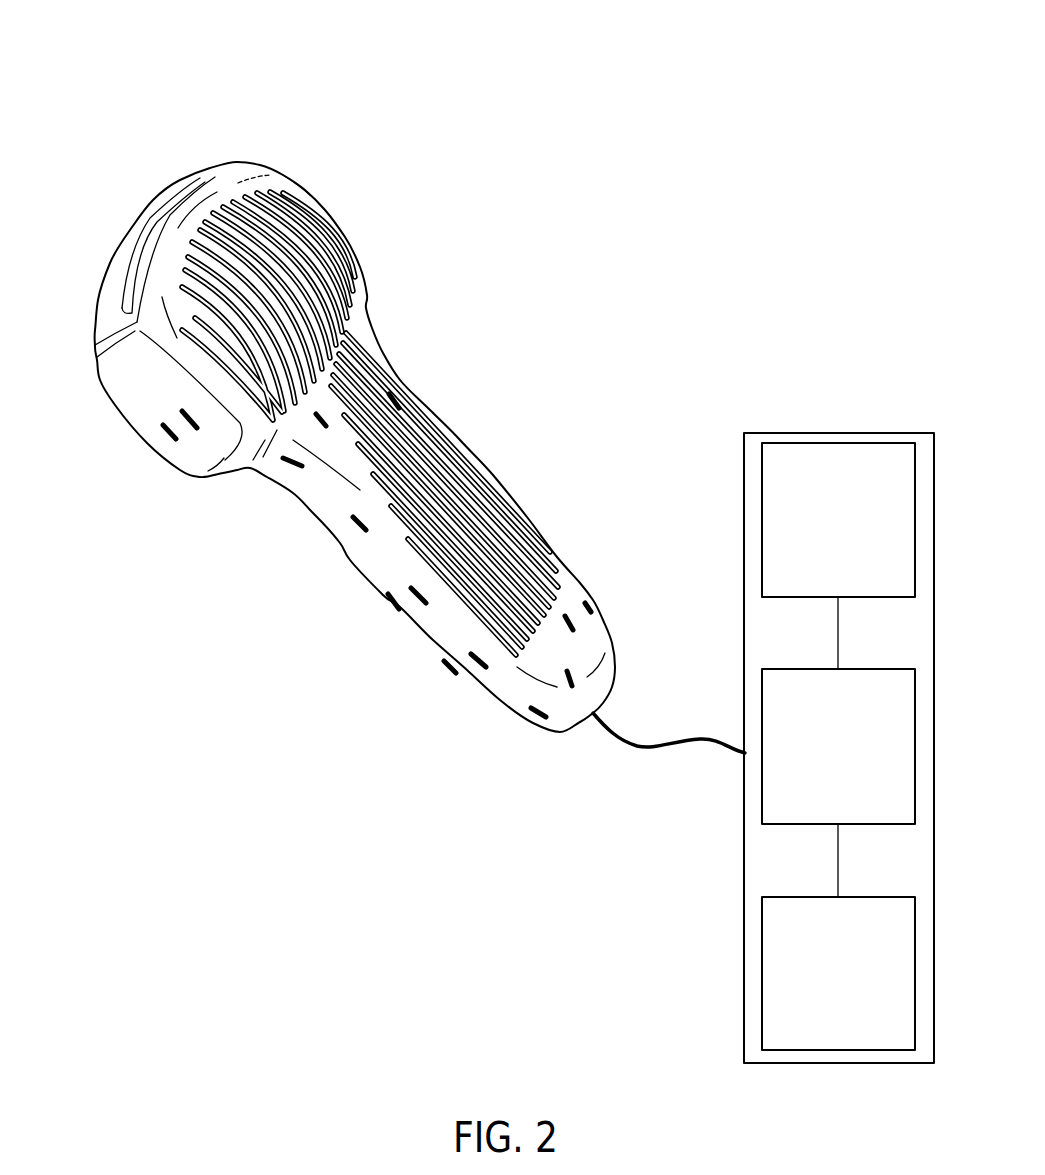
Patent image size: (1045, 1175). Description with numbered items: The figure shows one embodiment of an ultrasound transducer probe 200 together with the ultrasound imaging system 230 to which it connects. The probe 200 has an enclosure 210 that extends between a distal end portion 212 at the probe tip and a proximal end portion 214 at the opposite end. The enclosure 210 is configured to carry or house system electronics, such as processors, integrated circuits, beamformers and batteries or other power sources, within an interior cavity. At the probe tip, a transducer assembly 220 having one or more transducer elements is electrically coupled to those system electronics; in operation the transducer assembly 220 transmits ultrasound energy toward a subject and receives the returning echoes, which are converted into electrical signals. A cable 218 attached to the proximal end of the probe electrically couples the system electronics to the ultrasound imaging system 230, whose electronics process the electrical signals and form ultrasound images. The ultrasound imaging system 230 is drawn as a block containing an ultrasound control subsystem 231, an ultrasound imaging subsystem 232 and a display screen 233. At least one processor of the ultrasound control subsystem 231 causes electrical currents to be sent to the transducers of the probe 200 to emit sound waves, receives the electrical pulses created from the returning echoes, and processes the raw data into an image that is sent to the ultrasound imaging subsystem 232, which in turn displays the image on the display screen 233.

The ultrasound transducer probe 200 is at (392, 381).
The enclosure 210 is at (462, 447).
The distal end portion 212 is at (310, 164).
The proximal end portion 214 is at (618, 588).
The cable 218 is at (666, 743).
The transducer assembly 220 is at (141, 213).
The ultrasound imaging system 230 is at (798, 748).
The ultrasound control subsystem 231 is at (823, 1026).
The ultrasound imaging subsystem 232 is at (824, 799).
The display screen 233 is at (824, 546).